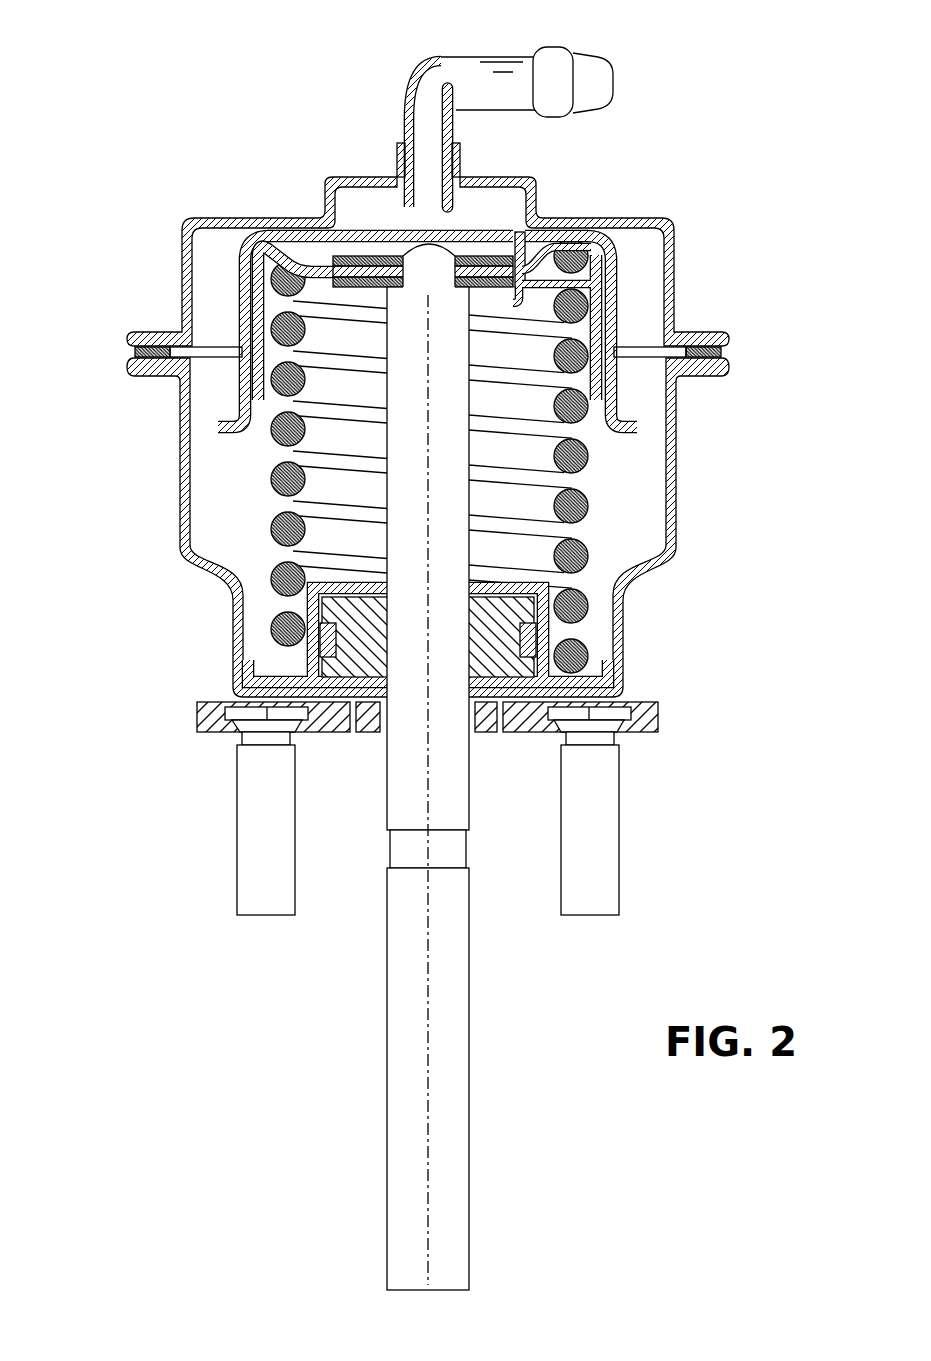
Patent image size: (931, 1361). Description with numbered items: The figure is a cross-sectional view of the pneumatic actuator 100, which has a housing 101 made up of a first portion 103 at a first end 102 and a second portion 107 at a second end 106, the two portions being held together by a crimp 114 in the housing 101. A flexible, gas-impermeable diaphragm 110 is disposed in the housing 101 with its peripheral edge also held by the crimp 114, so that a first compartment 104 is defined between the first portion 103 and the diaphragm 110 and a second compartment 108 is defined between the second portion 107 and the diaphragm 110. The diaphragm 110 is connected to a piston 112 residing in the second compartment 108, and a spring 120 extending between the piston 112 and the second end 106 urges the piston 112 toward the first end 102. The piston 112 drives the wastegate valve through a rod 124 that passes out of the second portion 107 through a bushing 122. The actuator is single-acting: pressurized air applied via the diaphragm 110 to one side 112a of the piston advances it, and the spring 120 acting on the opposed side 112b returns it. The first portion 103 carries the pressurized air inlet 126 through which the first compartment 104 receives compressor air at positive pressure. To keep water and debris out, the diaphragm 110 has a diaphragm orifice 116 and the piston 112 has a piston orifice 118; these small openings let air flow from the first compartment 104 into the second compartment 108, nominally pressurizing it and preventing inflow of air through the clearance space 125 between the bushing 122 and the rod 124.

The pneumatic actuator 100 is at (714, 137).
The housing 101 is at (107, 226).
The first end 102 is at (237, 217).
The first portion 103 is at (180, 293).
The first compartment 104 is at (647, 302).
The second end 106 is at (250, 703).
The second portion 107 is at (180, 397).
The second compartment 108 is at (642, 468).
The diaphragm 110 is at (377, 228).
The piston 112 is at (310, 232).
The one side of the piston 112a is at (477, 255).
The opposed side of the piston 112b is at (472, 290).
The crimp 114 is at (727, 357).
The diaphragm orifice 116 is at (513, 217).
The piston orifice 118 is at (516, 293).
The spring 120 is at (573, 552).
The bushing 122 is at (495, 668).
The rod 124 is at (447, 1050).
The clearance space 125 is at (380, 660).
The pressurized air inlet 126 is at (468, 62).